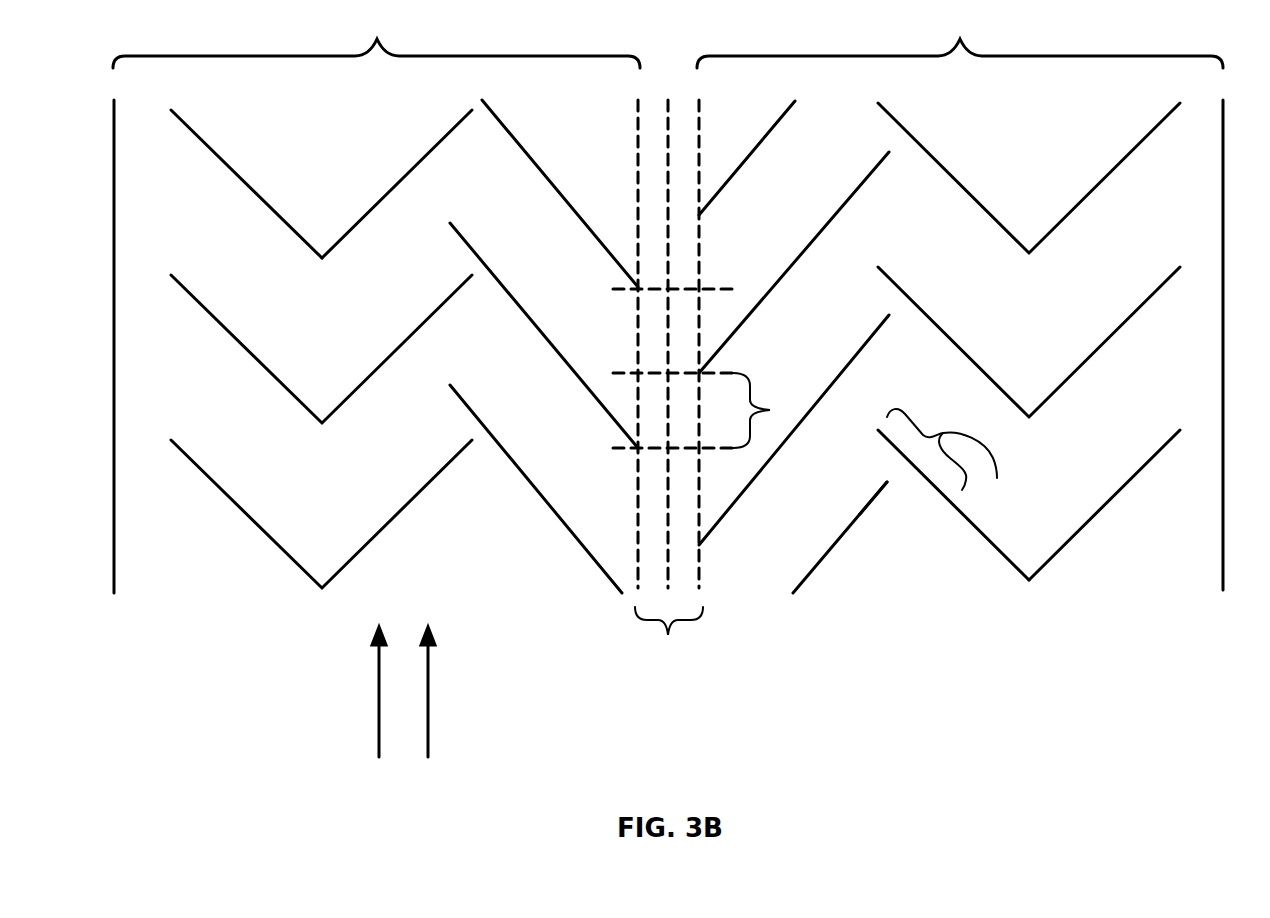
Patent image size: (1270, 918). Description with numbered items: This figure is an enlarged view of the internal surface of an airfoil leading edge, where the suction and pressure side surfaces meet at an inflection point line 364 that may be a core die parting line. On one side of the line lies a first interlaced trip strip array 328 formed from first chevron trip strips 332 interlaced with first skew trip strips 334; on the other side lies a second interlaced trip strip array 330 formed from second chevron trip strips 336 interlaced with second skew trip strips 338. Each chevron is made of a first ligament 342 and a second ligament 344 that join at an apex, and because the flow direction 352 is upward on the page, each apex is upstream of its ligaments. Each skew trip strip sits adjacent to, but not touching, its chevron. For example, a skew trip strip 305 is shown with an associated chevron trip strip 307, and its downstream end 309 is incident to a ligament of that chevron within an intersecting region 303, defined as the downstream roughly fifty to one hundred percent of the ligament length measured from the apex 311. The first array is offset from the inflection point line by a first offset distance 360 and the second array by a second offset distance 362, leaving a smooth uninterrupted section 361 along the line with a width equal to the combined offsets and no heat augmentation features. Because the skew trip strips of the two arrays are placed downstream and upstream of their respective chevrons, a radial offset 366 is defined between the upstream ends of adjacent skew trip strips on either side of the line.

The first interlaced trip strip array 328 is at (376, 298).
The second interlaced trip strip array 330 is at (960, 130).
The first chevron trip strips 332 is at (267, 372).
The first skew trip strips 334 is at (510, 131).
The second chevron trip strips 336 is at (748, 160).
The second skew trip strips 338 is at (1087, 363).
The first ligament 342 is at (410, 166).
The second ligament 344 is at (210, 148).
The flow direction 352 is at (379, 697).
The first offset distance 360 is at (638, 565).
The uninterrupted section 361 is at (675, 481).
The second offset distance 362 is at (699, 565).
The inflection point line 364 is at (668, 100).
The radial offset 366 is at (772, 410).
The intersecting region 303 is at (953, 462).
The skew trip strip 305 is at (822, 560).
The chevron trip strip 307 is at (1122, 490).
The downstream end 309 is at (887, 482).
The apex 311 is at (1032, 580).